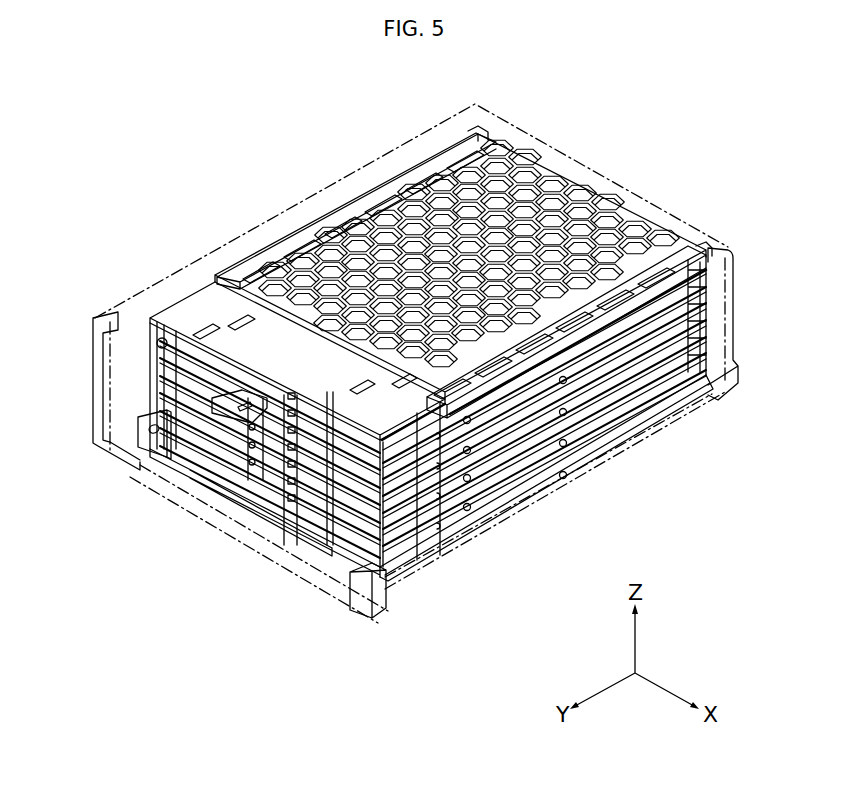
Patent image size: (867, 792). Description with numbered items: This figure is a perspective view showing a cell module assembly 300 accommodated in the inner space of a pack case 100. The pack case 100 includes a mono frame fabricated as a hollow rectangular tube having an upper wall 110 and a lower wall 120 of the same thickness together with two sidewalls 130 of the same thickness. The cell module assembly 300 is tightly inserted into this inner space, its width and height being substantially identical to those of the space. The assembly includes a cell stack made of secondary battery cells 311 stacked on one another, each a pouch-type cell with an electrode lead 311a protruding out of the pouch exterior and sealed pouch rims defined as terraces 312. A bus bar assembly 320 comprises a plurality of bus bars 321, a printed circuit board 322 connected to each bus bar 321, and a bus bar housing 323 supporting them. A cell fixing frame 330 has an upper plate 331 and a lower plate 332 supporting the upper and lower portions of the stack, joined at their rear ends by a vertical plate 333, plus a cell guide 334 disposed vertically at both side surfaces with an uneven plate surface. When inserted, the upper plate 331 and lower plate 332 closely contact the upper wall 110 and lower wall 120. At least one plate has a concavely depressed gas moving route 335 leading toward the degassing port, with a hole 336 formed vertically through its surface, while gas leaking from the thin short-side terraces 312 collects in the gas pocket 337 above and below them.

The pack case 100 is at (388, 374).
The upper wall 110 is at (232, 242).
The lower wall 120 is at (311, 570).
The sidewall 130 is at (108, 366).
The cell module assembly 300 is at (433, 364).
The secondary battery cell 311 is at (436, 435).
The electrode lead 311a is at (210, 455).
The terrace 312 is at (688, 366).
The bus bar assembly 320 is at (398, 431).
The bus bar 321 is at (168, 458).
The printed circuit board 322 is at (270, 500).
The bus bar housing 323 is at (397, 530).
The cell fixing frame 330 is at (499, 280).
The upper plate 331 is at (618, 213).
The lower plate 332 is at (618, 452).
The vertical plate 333 is at (690, 306).
The cell guide 334 is at (513, 457).
The gas moving route 335 is at (353, 236).
The hole 336 is at (474, 153).
The gas pocket 337 is at (690, 340).